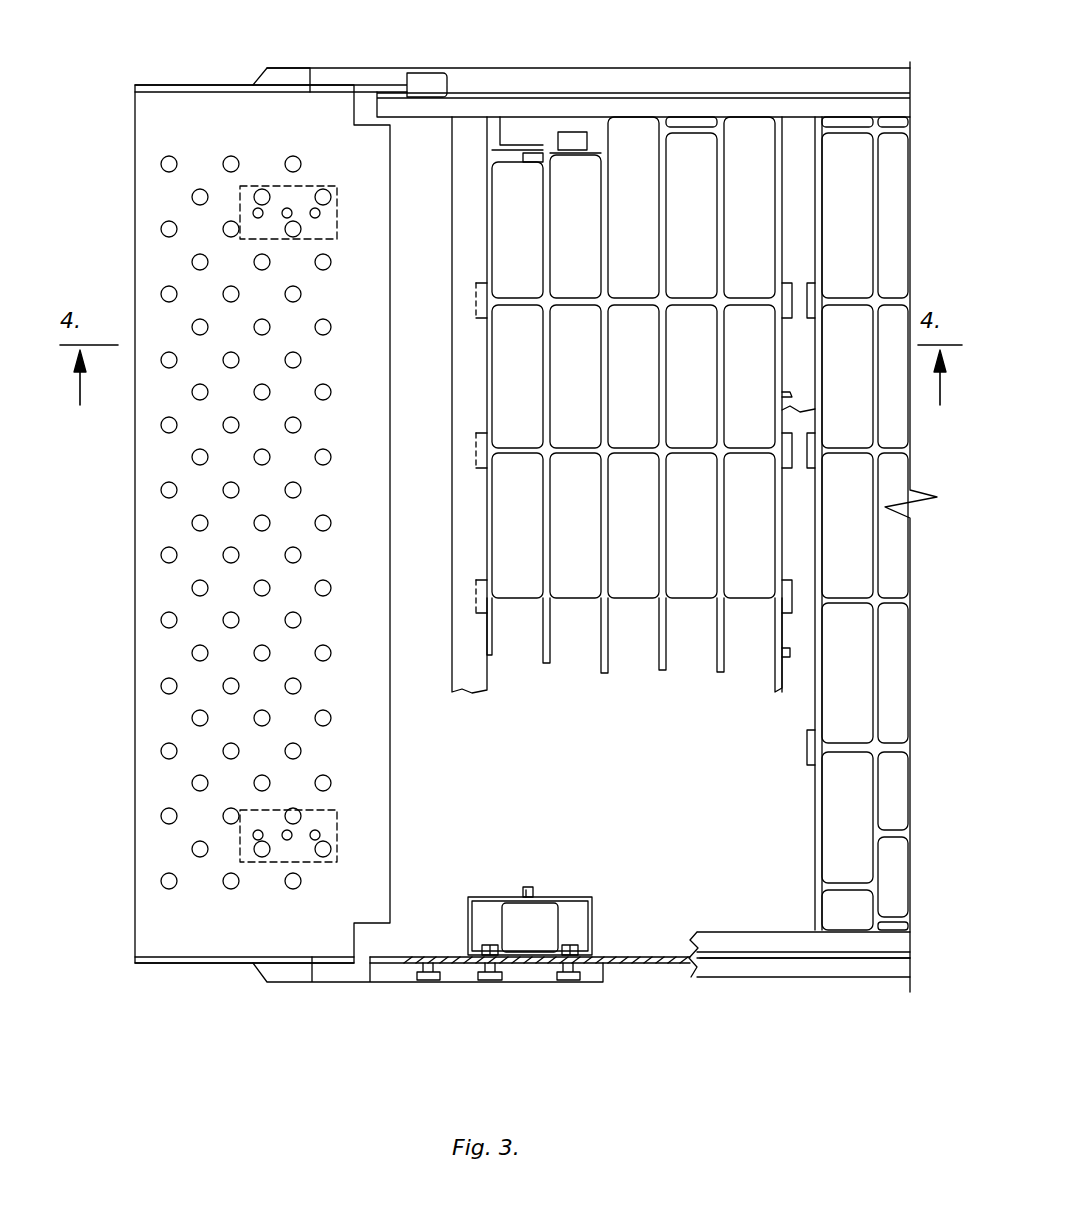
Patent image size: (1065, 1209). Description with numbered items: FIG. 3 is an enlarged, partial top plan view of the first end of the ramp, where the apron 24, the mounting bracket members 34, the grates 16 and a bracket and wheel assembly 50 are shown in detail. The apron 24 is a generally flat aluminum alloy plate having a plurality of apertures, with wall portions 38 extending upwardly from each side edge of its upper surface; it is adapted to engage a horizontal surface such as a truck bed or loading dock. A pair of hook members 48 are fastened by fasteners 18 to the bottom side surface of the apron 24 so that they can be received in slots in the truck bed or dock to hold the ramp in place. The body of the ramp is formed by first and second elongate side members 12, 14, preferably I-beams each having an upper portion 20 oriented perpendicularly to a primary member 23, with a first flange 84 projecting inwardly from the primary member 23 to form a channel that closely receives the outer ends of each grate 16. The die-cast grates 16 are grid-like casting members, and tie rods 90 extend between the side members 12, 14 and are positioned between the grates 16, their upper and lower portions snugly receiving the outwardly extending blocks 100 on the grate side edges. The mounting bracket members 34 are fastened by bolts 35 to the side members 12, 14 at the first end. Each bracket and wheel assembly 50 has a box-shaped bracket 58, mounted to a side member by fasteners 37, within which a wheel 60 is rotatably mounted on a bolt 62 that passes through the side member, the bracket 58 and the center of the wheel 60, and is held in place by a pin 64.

The first elongate side member 12 is at (865, 980).
The second elongate side member 14 is at (556, 83).
The grate 16 is at (640, 165).
The fastener 18 is at (320, 832).
The upper portion 20 is at (640, 85).
The primary member 23 is at (645, 968).
The apron 24 is at (164, 650).
The mounting bracket member 34 is at (325, 75).
The bolt 35 is at (568, 982).
The fastener 37 is at (487, 945).
The wall portion 38 is at (150, 85).
The hook member 48 is at (240, 215).
The bracket and wheel assembly 50 is at (613, 889).
The box-shaped bracket 58 is at (578, 150).
The wheel 60 is at (525, 130).
The bolt 62 is at (527, 888).
The pin 64 is at (535, 895).
The first flange 84 is at (430, 105).
The tie rod 90 is at (793, 125).
The block 100 is at (477, 445).